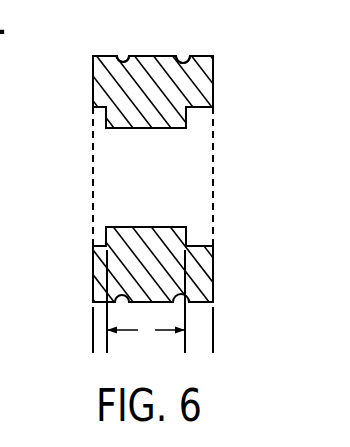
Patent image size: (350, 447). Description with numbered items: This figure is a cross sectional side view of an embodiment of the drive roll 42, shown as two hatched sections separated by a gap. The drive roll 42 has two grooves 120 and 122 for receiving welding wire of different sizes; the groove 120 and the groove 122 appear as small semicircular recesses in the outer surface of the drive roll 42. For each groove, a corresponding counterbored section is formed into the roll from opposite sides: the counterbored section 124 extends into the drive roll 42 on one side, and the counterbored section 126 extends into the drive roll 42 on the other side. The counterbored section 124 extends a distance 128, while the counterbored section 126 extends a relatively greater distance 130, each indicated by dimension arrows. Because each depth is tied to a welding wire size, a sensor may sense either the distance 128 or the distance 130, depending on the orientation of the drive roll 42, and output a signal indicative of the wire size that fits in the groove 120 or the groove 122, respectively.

The drive roll 42 is at (266, 110).
The groove 120 is at (123, 57).
The groove 122 is at (182, 57).
The counterbored section 124 is at (84, 173).
The counterbored section 126 is at (222, 180).
The distance 128 is at (84, 330).
The distance 130 is at (222, 330).